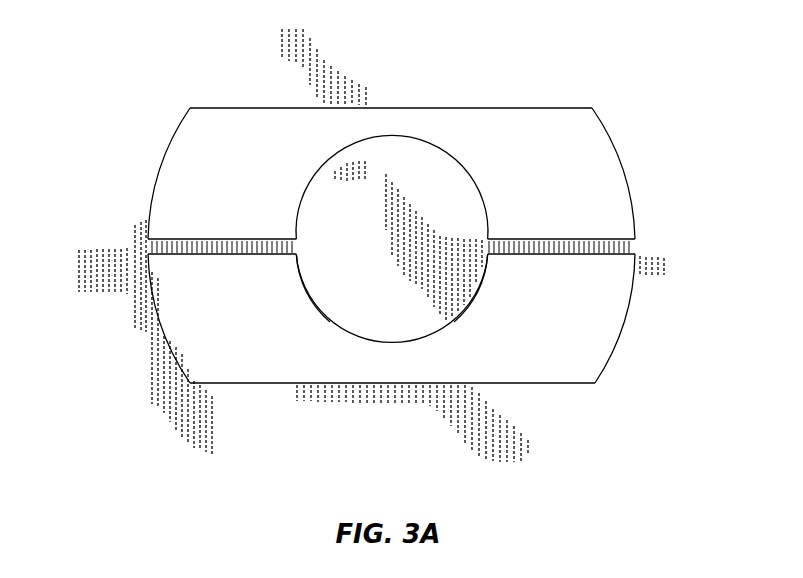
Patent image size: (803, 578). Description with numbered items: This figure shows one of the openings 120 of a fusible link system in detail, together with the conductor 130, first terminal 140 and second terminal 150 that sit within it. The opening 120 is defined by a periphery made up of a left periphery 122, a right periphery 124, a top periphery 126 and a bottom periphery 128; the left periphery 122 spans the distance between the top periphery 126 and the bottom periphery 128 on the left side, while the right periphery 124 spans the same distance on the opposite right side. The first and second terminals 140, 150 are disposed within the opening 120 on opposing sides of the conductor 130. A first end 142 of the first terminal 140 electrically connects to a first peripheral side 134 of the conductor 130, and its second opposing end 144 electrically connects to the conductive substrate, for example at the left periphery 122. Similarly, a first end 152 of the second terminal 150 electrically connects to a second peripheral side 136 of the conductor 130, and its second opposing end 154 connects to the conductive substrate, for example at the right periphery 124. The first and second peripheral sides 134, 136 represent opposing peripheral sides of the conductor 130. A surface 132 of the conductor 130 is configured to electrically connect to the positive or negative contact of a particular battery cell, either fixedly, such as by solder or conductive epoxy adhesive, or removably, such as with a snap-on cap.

The opening 120 is at (384, 234).
The left periphery 122 is at (148, 206).
The right periphery 124 is at (622, 168).
The top periphery 126 is at (268, 108).
The bottom periphery 128 is at (368, 387).
The conductor 130 is at (427, 157).
The surface 132 is at (388, 225).
The first peripheral side 134 is at (293, 273).
The second peripheral side 136 is at (492, 262).
The first terminal 140 is at (166, 342).
The first end 142 is at (283, 258).
The second opposing end 144 is at (150, 257).
The second terminal 150 is at (613, 339).
The first end 152 is at (506, 258).
The second opposing end 154 is at (632, 261).